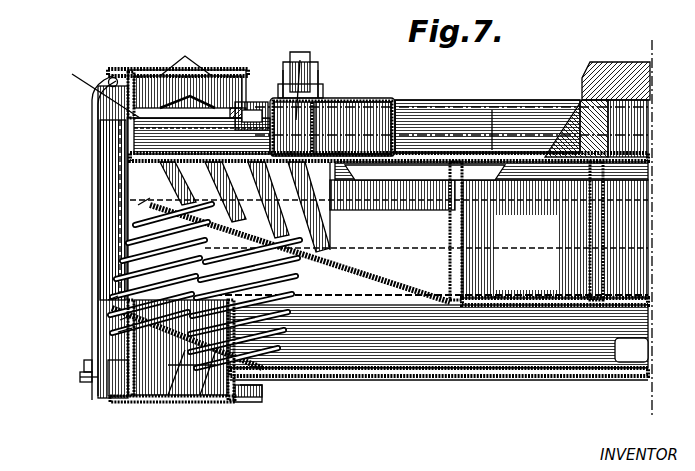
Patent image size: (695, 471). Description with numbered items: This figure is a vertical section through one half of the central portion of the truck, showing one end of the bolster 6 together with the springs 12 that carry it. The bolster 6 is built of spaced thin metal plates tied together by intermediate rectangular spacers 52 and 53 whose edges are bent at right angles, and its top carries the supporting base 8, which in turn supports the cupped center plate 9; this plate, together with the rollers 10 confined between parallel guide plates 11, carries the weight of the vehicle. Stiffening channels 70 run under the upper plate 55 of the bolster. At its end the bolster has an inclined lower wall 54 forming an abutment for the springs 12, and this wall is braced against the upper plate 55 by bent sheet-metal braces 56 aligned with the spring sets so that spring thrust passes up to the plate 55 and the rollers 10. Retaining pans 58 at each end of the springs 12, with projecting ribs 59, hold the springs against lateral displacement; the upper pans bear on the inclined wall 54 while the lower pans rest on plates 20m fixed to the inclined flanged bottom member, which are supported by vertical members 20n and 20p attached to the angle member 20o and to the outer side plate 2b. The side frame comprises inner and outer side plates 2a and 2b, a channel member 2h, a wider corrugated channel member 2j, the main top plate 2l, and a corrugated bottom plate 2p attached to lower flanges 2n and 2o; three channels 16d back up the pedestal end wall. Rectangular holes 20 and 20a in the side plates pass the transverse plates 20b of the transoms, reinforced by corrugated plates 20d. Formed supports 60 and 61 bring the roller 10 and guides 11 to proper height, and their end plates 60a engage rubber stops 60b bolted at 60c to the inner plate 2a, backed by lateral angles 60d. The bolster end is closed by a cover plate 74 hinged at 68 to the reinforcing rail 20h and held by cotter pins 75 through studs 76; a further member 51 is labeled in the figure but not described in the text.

The inner side plate 2a is at (312, 236).
The outer side plate 2b is at (140, 118).
The channel member 2h is at (118, 70).
The channel member 2j is at (236, 110).
The main top plate 2l is at (148, 70).
The outwardly formed flange 2n is at (236, 406).
The outwardly formed flange 2o is at (110, 405).
The bottom plate 2p is at (214, 410).
The bolster 6 is at (410, 368).
The supporting base 8 is at (600, 128).
The cupped center plate 9 is at (582, 84).
The rollers 10 is at (308, 58).
The guide plates 11 is at (282, 70).
The springs 12 is at (116, 282).
The channels 16d is at (184, 400).
The rectangular holes 20 is at (262, 395).
The rectangular holes 20a is at (118, 332).
The transverse plates 20b is at (132, 160).
The corrugated plates 20d is at (524, 300).
The reinforcing rails 20h is at (108, 130).
The plates 20m is at (120, 320).
The vertical member 20n is at (262, 400).
The angle member 20o is at (252, 410).
The vertical member 20p is at (118, 385).
The spring guide 51 is at (203, 192).
The rectangular spacer 52 is at (590, 230).
The rectangular spacer 53 is at (450, 236).
The inclined lower wall 54 is at (380, 278).
The upper plate 55 is at (496, 121).
The brace 56 is at (289, 207).
The retaining pan 58 is at (135, 196).
The ribs 59 is at (130, 252).
The formed support 60 is at (325, 110).
The end plates 60a is at (300, 60).
The stops 60b is at (252, 112).
The bolts 60c is at (190, 126).
The angles 60d is at (93, 89).
The formed support 61 is at (378, 110).
The hinge 68 is at (110, 78).
The stiffening channels 70 is at (372, 180).
The cover plates 74 is at (94, 216).
The cotter pins 75 is at (84, 364).
The studs 76 is at (82, 380).